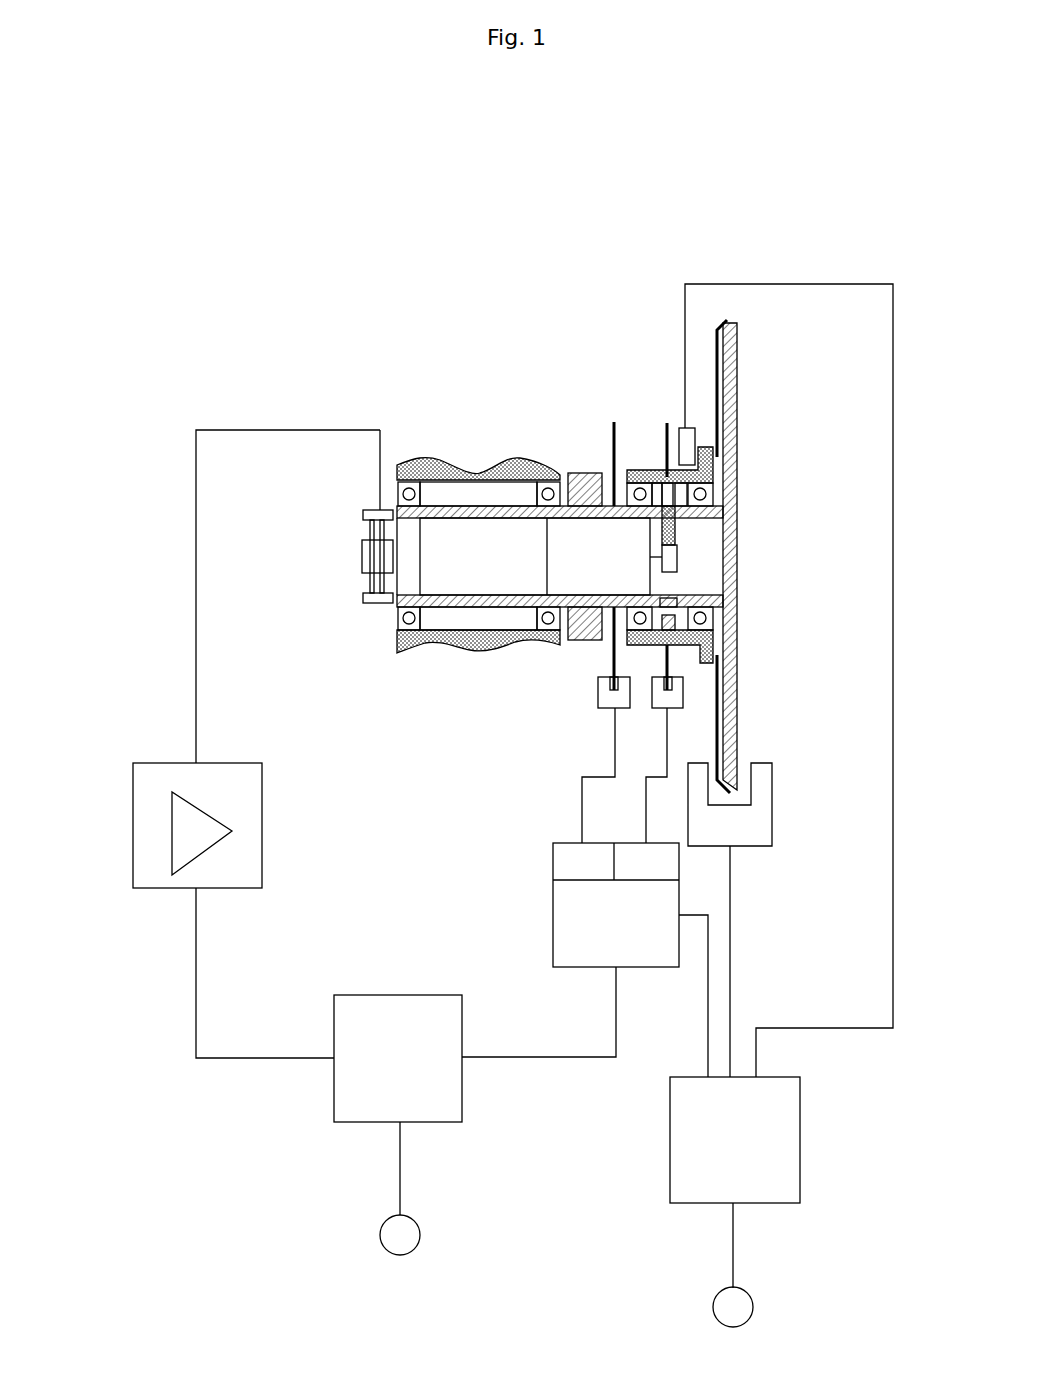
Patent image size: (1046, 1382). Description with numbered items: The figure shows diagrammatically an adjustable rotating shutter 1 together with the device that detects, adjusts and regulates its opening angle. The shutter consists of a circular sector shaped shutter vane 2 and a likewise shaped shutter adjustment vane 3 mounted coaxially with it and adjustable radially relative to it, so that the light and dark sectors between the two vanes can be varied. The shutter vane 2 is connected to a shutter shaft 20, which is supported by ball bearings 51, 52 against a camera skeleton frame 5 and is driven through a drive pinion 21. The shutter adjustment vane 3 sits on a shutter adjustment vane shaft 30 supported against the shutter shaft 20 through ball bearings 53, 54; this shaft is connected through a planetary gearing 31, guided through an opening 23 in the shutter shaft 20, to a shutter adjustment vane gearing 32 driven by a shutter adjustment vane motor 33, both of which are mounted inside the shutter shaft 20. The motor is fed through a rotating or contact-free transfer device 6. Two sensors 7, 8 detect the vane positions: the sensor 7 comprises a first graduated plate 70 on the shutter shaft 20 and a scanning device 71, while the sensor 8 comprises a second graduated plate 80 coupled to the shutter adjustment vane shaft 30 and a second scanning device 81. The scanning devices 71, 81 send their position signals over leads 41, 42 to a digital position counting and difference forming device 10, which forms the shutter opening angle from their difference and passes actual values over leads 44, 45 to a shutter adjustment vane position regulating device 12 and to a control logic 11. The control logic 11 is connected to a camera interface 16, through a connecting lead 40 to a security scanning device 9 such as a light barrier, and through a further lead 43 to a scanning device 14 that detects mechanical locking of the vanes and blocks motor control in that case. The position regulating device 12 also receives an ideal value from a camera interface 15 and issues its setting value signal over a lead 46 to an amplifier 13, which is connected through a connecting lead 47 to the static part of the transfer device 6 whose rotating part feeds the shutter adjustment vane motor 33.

The adjustable rotating shutter 1 is at (795, 506).
The shutter vane 2 is at (737, 475).
The shutter adjustment vane 3 is at (727, 320).
The camera skeleton frame 5 is at (462, 644).
The transfer device 6 is at (368, 507).
The sensor 7 is at (590, 666).
The sensor 8 is at (700, 668).
The security scanning device 9 is at (773, 845).
The digital position counting and difference forming device 10 is at (575, 918).
The control logic 11 is at (733, 1143).
The shutter adjustment vane position regulating device 12 is at (407, 1063).
The amplifier 13 is at (170, 793).
The scanning device 14 is at (686, 427).
The interface 15 is at (400, 1235).
The interface 16 is at (737, 1307).
The shutter shaft 20 is at (487, 538).
The drive pinion 21 is at (582, 638).
The opening in shutter shaft 23 is at (697, 517).
The shutter adjustment vane shaft 30 is at (655, 640).
The planetary gearing 31 is at (625, 472).
The shutter adjustment vane gearing 32 is at (612, 537).
The shutter adjustment vane motor 33 is at (427, 463).
The connecting lead 40 is at (733, 910).
The lead 41 is at (582, 778).
The lead 42 is at (646, 810).
The lead 43 is at (897, 787).
The lead 44 is at (567, 1057).
The lead 45 is at (708, 1013).
The lead 46 is at (198, 1007).
The connecting lead 47 is at (196, 592).
The ball bearing 51 is at (398, 614).
The ball bearing 52 is at (543, 482).
The ball bearing 53 is at (618, 470).
The ball bearing 54 is at (737, 607).
The first graduated plate 70 is at (613, 460).
The scanning device 71 is at (612, 695).
The second graduated plate 80 is at (667, 423).
The second scanning device 81 is at (676, 700).